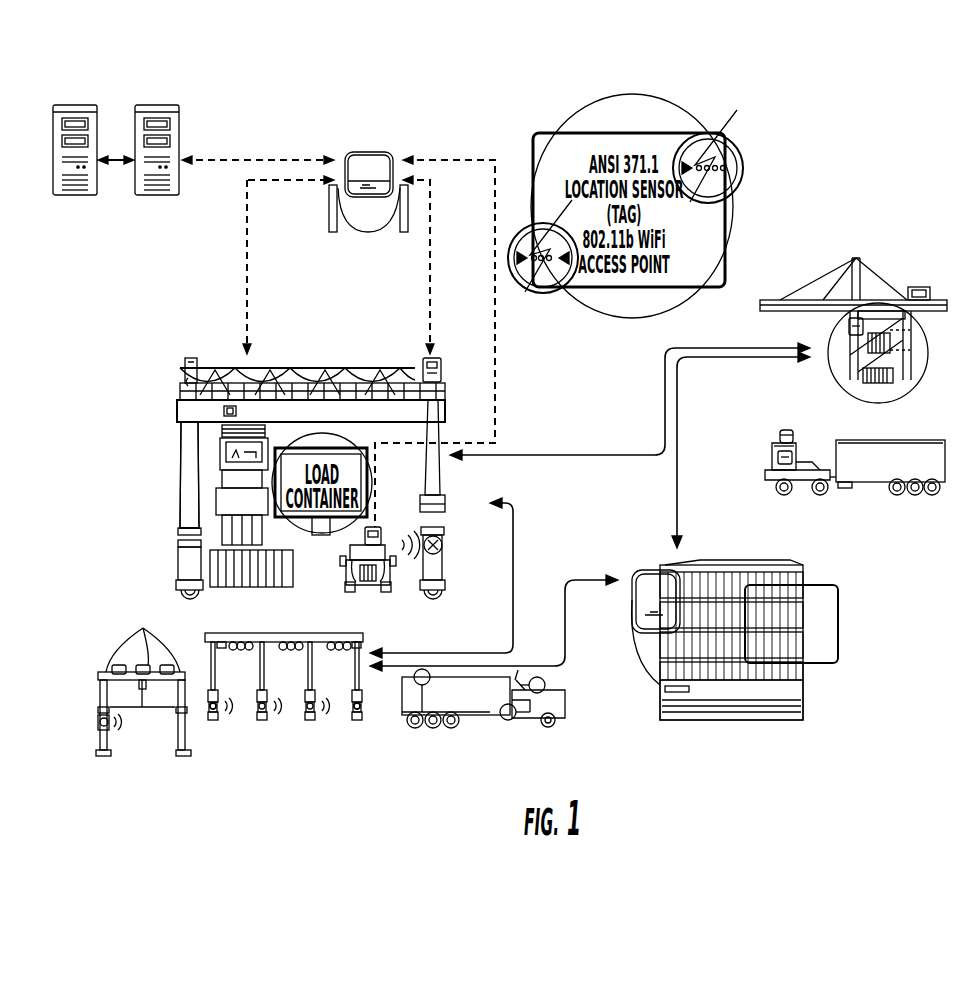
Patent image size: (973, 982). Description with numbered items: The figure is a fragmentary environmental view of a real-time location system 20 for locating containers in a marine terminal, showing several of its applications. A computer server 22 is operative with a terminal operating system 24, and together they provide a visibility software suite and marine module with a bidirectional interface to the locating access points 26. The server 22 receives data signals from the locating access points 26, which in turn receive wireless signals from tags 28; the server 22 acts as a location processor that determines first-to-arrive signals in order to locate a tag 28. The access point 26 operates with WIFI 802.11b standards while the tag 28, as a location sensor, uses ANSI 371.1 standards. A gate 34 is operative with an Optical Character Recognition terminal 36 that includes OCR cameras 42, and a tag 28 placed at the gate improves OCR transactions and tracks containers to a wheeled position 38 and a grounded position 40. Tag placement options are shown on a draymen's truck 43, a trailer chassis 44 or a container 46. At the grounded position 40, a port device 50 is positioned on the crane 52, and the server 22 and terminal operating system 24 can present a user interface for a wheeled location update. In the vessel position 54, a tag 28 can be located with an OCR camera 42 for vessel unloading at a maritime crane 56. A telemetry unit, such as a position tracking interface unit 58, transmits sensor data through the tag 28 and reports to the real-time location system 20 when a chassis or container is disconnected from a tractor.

The real-time location system 20 is at (461, 132).
The computer server 22 is at (85, 105).
The terminal operating system 24 is at (168, 105).
The locating access point 26 is at (367, 152).
The tag 28 is at (740, 155).
The gate 34 is at (310, 771).
The Optical Character Recognition terminal 36 is at (143, 734).
The wheeled position 38 is at (925, 618).
The grounded position 40 is at (131, 389).
The OCR camera 42 is at (143, 634).
The draymen's truck 43 is at (545, 685).
The trailer chassis 44 is at (514, 719).
The container 46 is at (425, 725).
The port device 50 is at (443, 545).
The crane 52 is at (186, 410).
The vessel position 54 is at (966, 422).
The maritime crane 56 is at (884, 292).
The position tracking interface unit 58 is at (446, 498).